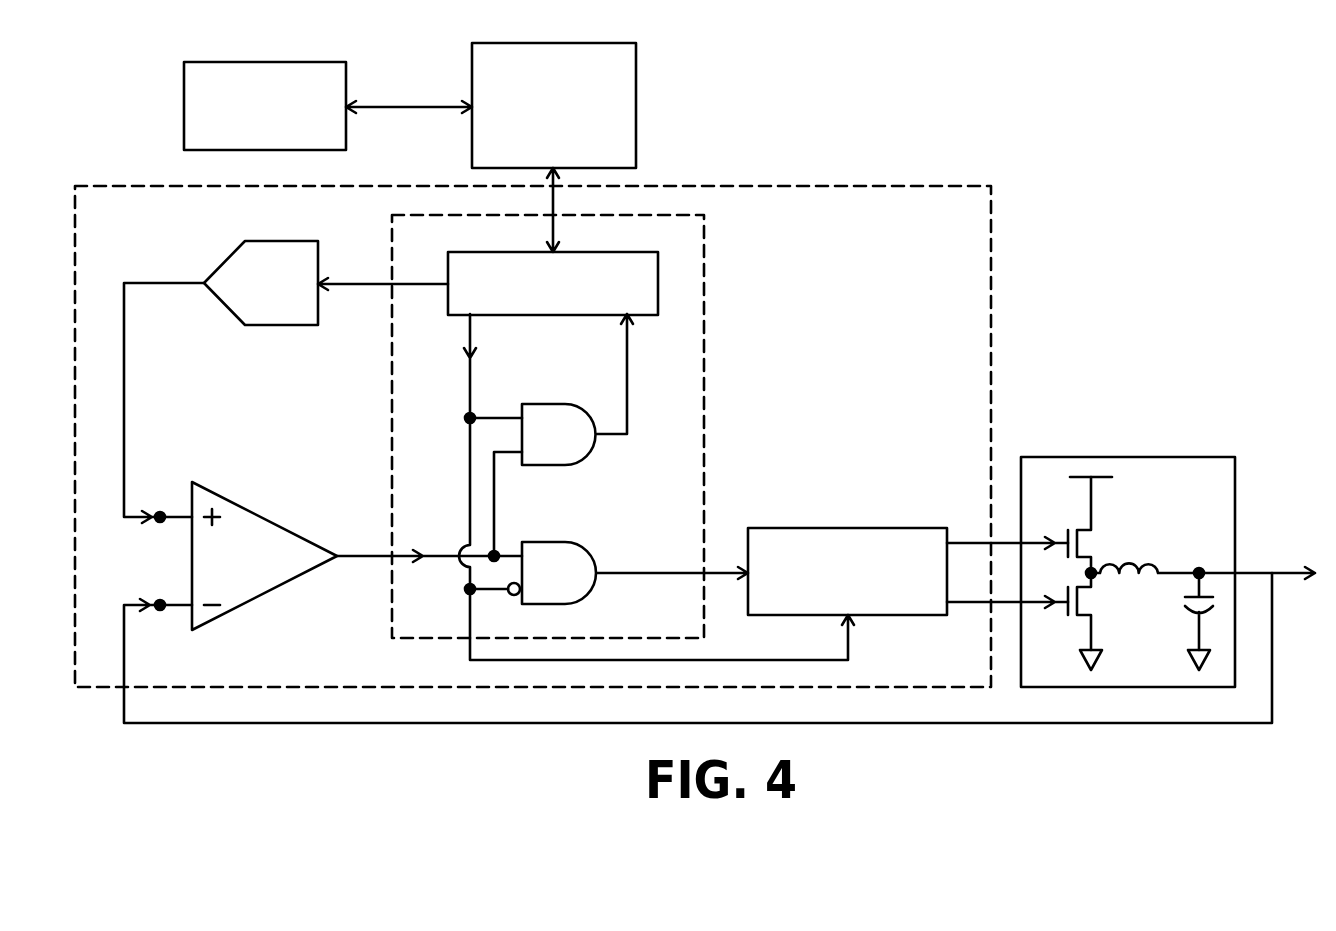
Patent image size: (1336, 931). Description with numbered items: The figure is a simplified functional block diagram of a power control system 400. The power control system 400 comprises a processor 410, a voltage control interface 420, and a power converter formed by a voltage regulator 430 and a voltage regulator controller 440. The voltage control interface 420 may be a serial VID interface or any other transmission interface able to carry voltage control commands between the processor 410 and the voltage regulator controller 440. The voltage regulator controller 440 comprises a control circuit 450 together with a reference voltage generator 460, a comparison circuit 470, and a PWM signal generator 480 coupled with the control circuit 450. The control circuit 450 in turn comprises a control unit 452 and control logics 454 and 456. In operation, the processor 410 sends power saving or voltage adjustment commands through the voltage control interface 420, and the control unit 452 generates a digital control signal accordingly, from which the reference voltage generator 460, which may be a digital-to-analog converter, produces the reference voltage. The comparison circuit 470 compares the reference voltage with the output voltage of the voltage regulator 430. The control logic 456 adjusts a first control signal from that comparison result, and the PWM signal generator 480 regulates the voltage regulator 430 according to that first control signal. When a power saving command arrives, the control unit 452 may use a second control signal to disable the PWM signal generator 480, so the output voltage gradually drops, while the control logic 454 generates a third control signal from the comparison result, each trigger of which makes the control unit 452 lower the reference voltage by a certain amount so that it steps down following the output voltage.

The power control system 400 is at (1181, 141).
The processor 410 is at (184, 106).
The voltage control interface 420 is at (636, 107).
The voltage regulator 430 is at (1127, 457).
The voltage regulator controller 440 is at (991, 318).
The control circuit 450 is at (704, 403).
The control unit 452 is at (658, 284).
The control logic 454 is at (579, 451).
The control logic 456 is at (579, 589).
The reference voltage generator 460 is at (295, 303).
The comparison circuit 470 is at (252, 575).
The PWM signal generator 480 is at (848, 528).